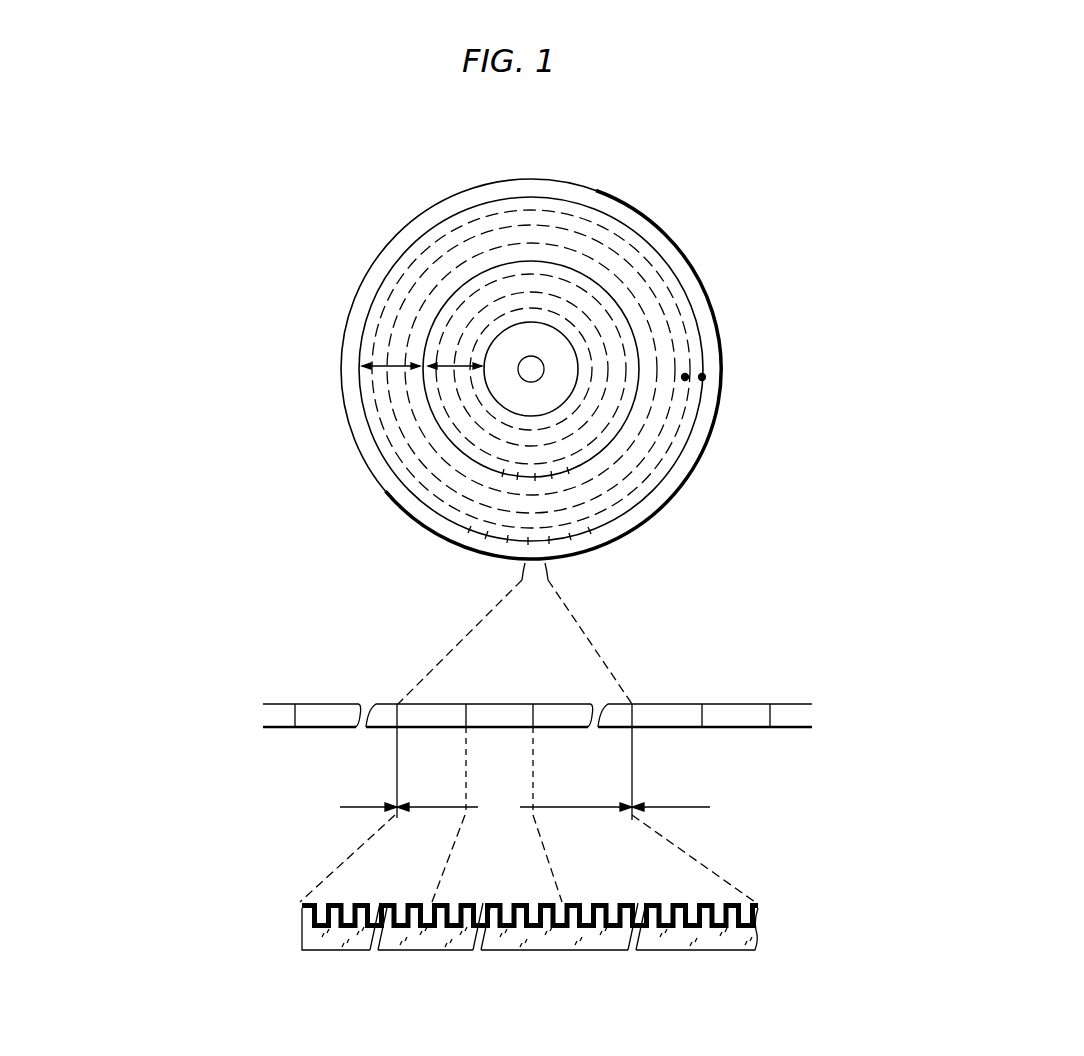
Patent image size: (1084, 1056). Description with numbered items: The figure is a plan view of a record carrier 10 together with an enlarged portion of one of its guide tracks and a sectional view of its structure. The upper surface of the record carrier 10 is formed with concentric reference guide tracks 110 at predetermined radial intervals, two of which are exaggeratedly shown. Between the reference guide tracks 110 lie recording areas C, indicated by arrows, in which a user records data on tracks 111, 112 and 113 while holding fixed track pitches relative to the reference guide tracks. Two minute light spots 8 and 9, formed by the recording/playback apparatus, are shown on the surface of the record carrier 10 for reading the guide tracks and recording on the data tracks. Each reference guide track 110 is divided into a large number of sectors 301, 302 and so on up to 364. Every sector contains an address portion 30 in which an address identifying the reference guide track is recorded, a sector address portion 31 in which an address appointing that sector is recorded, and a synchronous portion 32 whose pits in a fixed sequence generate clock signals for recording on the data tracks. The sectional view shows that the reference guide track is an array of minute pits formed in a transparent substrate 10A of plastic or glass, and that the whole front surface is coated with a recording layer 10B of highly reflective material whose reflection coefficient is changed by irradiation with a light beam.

The record carrier 10 is at (546, 176).
The reference guide track 110 is at (675, 275).
The data recording track 111 is at (607, 295).
The data recording track 112 is at (565, 296).
The data recording track 113 is at (527, 305).
The light spot 9 is at (702, 380).
The light spot 8 is at (685, 380).
The recording area C is at (388, 367).
The address portion 30 is at (438, 714).
The sector address portion 31 is at (280, 708).
The synchronous portion 32 is at (342, 710).
The sector 364 is at (345, 807).
The sector 301 is at (514, 807).
The sector 302 is at (694, 807).
The substrate 10A is at (426, 950).
The recording layer 10B is at (302, 904).